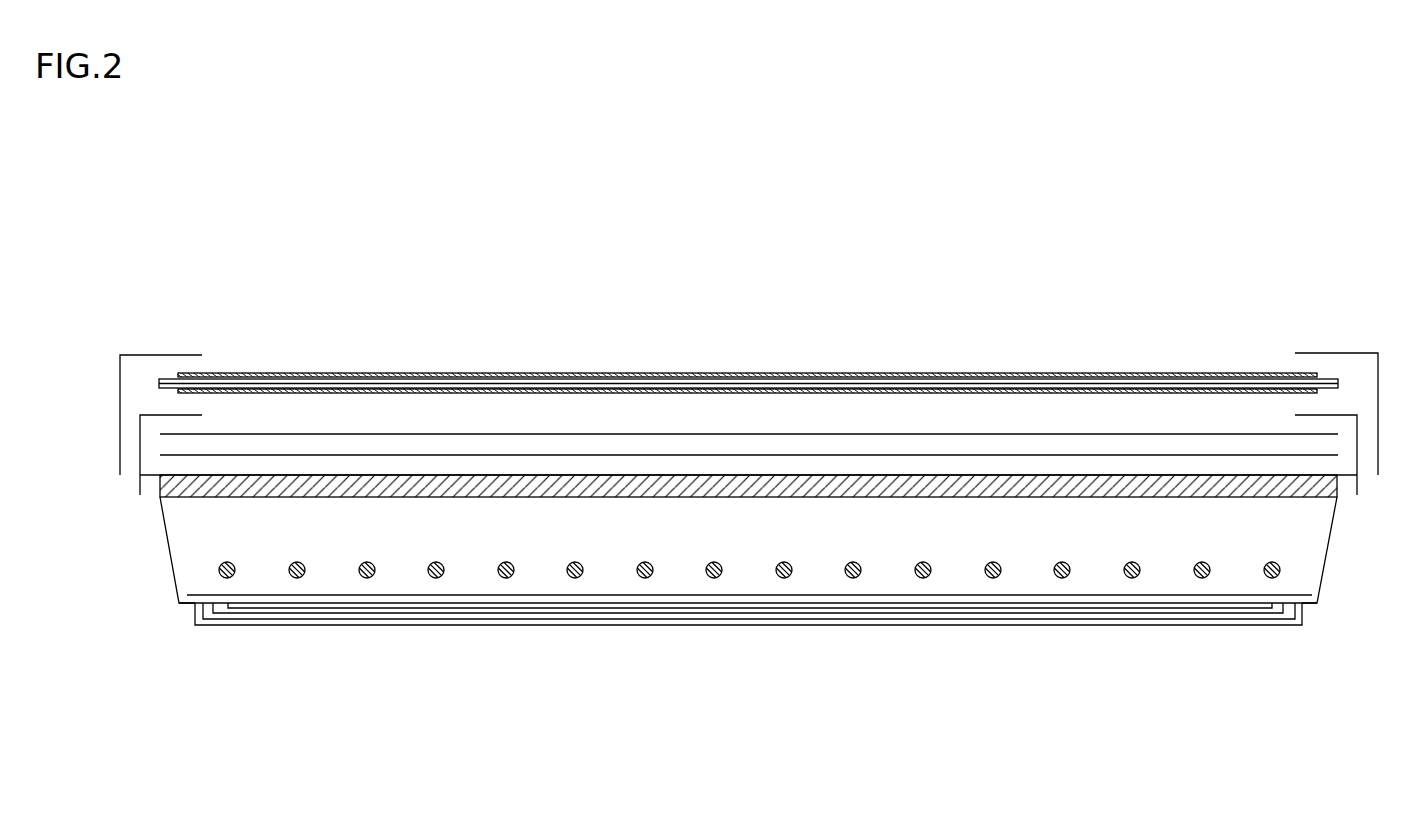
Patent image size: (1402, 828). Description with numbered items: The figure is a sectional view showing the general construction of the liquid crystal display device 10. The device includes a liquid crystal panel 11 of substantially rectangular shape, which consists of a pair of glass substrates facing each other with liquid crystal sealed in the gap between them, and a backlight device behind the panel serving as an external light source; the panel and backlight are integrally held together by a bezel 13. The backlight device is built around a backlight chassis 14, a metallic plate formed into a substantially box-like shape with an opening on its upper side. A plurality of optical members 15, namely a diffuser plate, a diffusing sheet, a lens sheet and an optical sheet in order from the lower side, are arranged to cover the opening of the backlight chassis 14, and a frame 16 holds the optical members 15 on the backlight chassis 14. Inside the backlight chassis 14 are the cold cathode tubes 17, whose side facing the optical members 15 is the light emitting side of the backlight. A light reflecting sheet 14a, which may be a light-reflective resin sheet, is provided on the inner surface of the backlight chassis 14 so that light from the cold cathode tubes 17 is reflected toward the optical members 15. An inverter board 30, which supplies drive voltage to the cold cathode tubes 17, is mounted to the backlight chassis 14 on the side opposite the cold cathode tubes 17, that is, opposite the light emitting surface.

The liquid crystal display device 10 is at (603, 298).
The liquid crystal panel 11 is at (457, 374).
The bezel 13 is at (168, 353).
The backlight chassis 14 is at (165, 537).
The light reflecting sheet 14a is at (1090, 595).
The optical members 15 is at (735, 475).
The frame 16 is at (150, 413).
The cold cathode tubes 17 is at (437, 562).
The inverter board 30 is at (445, 603).